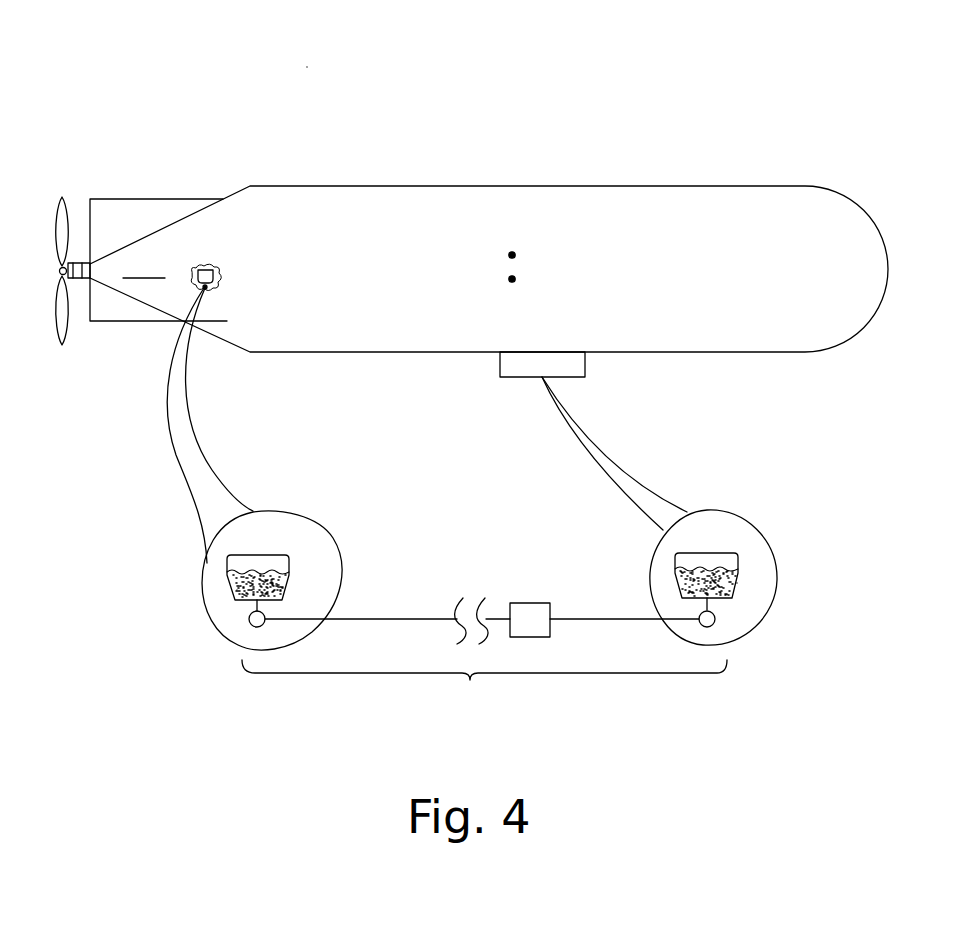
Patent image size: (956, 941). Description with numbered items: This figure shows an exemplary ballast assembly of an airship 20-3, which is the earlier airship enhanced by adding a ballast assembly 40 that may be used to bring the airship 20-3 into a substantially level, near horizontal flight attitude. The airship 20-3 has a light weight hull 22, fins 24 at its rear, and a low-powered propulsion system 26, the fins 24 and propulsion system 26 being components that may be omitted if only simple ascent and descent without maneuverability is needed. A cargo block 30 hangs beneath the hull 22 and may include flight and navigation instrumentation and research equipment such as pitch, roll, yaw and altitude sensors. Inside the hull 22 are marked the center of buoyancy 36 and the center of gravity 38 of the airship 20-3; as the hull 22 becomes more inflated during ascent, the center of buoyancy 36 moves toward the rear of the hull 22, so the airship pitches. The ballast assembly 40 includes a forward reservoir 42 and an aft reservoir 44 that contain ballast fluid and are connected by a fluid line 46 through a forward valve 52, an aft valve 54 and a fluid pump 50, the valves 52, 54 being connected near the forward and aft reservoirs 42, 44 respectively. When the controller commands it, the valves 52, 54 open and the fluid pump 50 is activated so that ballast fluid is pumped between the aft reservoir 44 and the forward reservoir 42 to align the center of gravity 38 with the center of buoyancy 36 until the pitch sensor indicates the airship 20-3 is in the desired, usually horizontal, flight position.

The airship 20-3 is at (306, 62).
The hull 22 is at (632, 185).
The fins 24 is at (147, 199).
The propulsion system 26 is at (79, 184).
The cargo block 30 is at (500, 377).
The center of buoyancy 36 is at (512, 253).
The center of gravity 38 is at (511, 281).
The ballast assembly 40 is at (484, 687).
The forward reservoir 42 is at (685, 553).
The aft reservoir 44 is at (227, 558).
The fluid line 46 is at (382, 618).
The fluid pump 50 is at (540, 637).
The forward valve 52 is at (713, 620).
The aft valve 54 is at (250, 625).